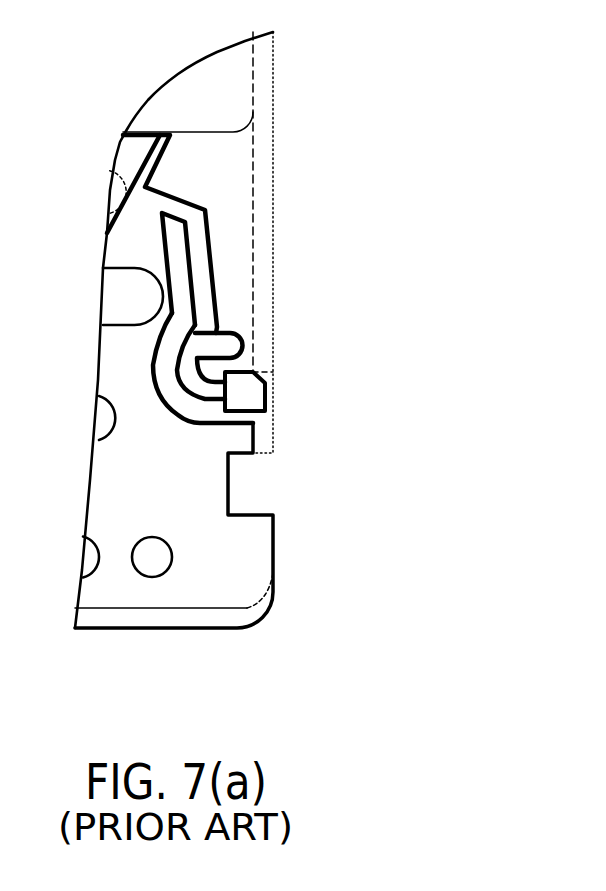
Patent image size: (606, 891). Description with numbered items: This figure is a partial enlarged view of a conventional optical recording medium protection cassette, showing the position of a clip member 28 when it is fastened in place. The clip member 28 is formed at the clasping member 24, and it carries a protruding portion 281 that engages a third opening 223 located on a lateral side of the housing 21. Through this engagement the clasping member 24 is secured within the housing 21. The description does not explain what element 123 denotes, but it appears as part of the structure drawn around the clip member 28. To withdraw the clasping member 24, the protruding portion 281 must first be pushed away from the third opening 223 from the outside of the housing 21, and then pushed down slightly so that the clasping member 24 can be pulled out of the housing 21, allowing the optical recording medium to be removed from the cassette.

The housing 21 is at (233, 183).
The clip member 28 is at (205, 267).
The third opening 223 is at (268, 380).
The protruding portion 281 is at (253, 397).
The side plate 123 is at (197, 435).
The clasping member 24 is at (205, 618).